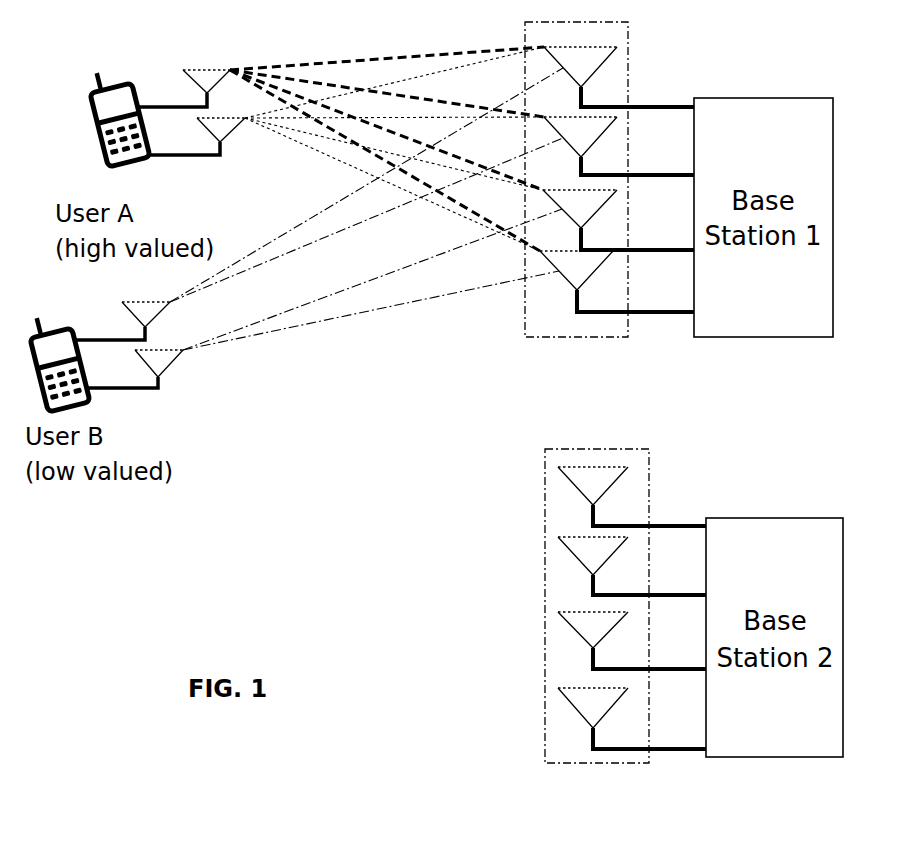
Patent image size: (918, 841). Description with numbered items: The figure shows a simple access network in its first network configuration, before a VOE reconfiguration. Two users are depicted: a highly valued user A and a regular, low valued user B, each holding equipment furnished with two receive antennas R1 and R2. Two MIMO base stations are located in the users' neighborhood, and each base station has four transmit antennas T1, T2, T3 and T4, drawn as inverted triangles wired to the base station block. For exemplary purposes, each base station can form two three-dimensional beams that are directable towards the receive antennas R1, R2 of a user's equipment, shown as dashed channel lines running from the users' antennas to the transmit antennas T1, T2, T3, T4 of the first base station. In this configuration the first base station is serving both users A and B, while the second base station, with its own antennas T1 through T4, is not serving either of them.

The transmit antenna T1 is at (625, 286).
The transmit antenna T2 is at (625, 356).
The transmit antenna T3 is at (624, 429).
The transmit antenna T4 is at (623, 500).
The receive antenna R1 is at (151, 205).
The receive antenna R2 is at (166, 253).